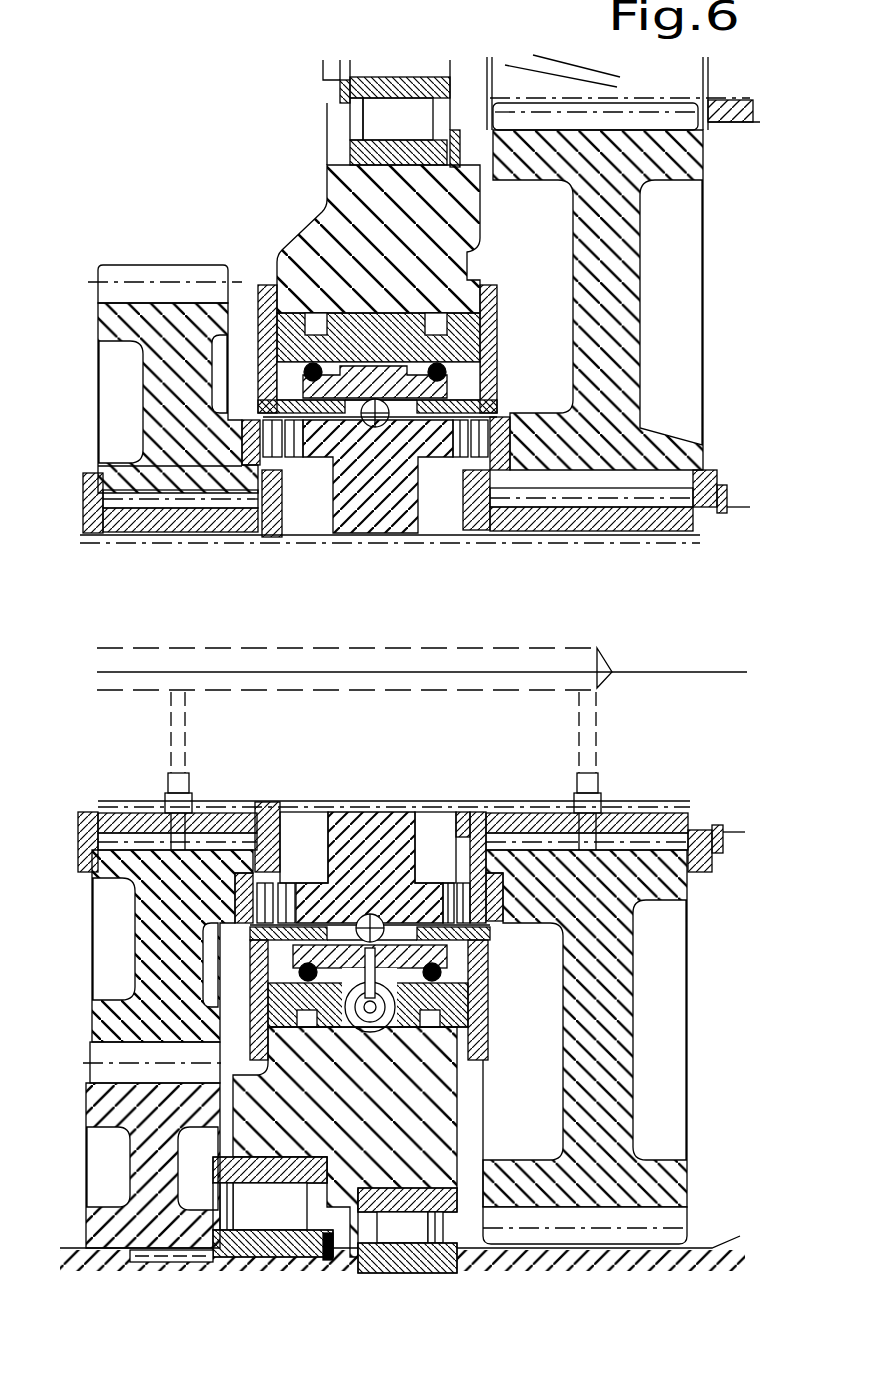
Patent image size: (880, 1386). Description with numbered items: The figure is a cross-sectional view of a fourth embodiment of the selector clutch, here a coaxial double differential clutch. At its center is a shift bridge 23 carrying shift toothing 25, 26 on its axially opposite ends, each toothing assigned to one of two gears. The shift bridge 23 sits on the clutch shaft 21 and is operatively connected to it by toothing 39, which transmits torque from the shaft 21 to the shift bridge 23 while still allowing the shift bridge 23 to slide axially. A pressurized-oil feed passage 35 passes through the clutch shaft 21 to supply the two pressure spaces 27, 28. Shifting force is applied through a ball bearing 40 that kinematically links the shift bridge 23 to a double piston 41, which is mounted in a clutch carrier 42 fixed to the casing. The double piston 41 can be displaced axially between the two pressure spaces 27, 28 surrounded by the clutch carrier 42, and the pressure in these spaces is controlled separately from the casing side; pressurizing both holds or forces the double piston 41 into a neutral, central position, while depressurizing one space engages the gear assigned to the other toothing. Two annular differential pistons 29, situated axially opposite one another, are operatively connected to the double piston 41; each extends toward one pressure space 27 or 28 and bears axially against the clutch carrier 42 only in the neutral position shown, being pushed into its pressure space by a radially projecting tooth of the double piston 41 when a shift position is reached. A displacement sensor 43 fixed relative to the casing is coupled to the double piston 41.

The clutch shaft 21 is at (695, 642).
The shift bridge 23 is at (385, 497).
The shift toothing 25 is at (456, 882).
The shift toothing 26 is at (257, 416).
The pressure space 27 is at (478, 968).
The pressure space 28 is at (250, 957).
The annular differential piston 29 is at (347, 372).
The pressurized-oil feed passage 35 is at (470, 1005).
The toothing 39 is at (383, 540).
The ball bearing 40 is at (367, 920).
The double piston 41 is at (460, 386).
The clutch carrier 42 is at (497, 314).
The displacement sensor 43 is at (443, 1073).